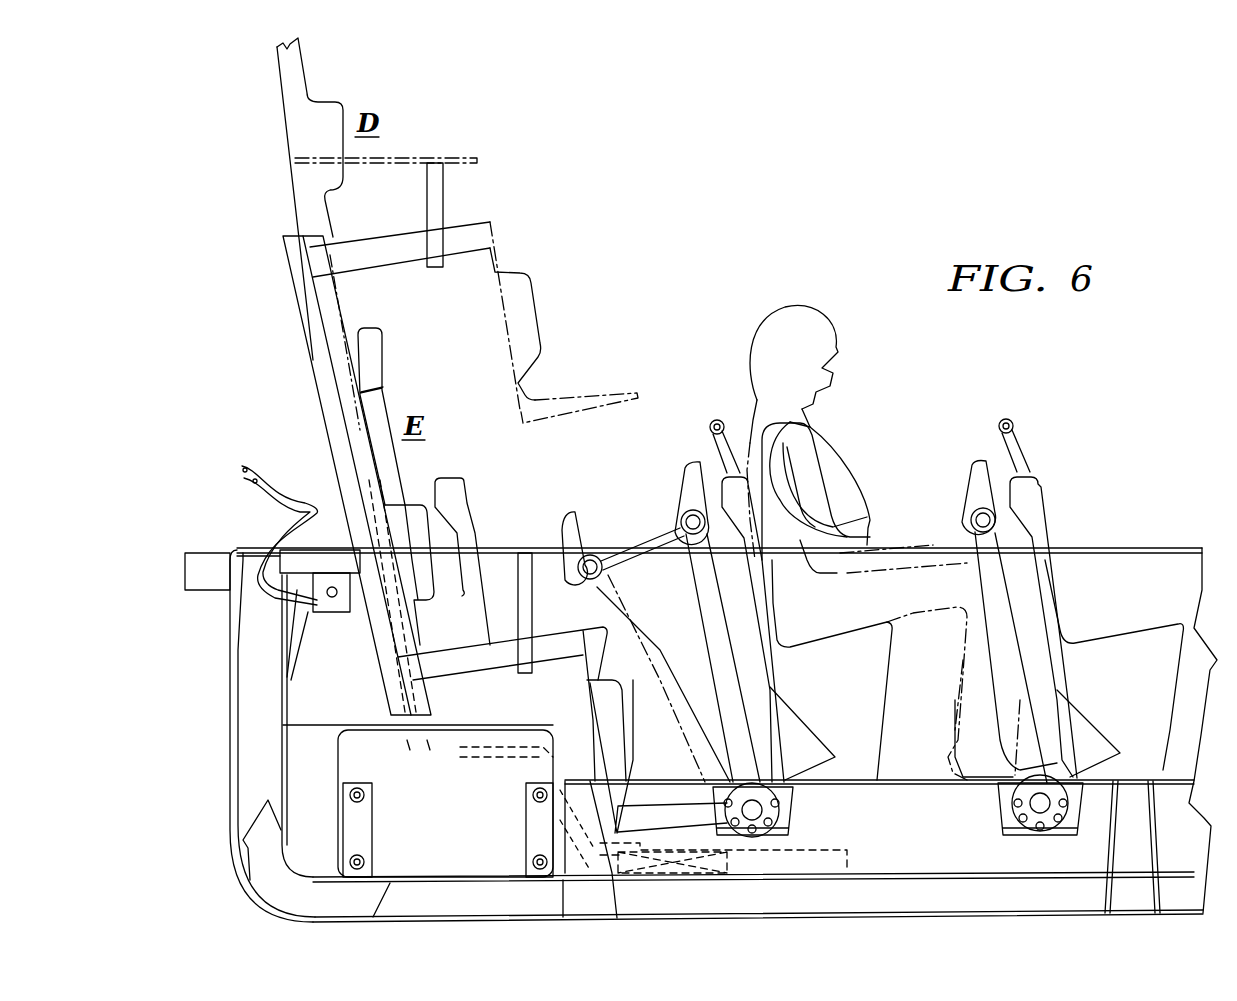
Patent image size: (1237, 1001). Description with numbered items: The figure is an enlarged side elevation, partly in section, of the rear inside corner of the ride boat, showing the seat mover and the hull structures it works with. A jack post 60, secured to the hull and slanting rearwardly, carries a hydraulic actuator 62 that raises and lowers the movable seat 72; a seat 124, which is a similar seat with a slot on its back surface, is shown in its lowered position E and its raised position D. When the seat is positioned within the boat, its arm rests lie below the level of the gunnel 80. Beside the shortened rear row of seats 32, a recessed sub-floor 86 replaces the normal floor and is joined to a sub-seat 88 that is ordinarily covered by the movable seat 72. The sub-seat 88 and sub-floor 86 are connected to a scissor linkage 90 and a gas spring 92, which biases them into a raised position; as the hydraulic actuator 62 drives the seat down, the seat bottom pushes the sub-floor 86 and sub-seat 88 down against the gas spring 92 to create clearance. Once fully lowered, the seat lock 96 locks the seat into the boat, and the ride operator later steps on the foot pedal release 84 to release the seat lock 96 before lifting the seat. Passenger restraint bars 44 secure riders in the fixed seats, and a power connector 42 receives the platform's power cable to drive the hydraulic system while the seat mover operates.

The rear row of seats 32 is at (463, 502).
The power connector 42 is at (206, 556).
The passenger restraint bars 44 is at (587, 528).
The jack post 60 is at (323, 378).
The hydraulic actuator 62 is at (372, 632).
The movable seat 72 is at (372, 342).
The gunnel 80 is at (1118, 563).
The foot pedal release 84 is at (277, 488).
The recessed sub-floor 86 is at (753, 846).
The sub-seat 88 is at (492, 752).
The scissor linkage 90 is at (678, 868).
The gas spring 92 is at (838, 862).
The seat lock 96 is at (323, 613).
The seat 124 is at (372, 380).